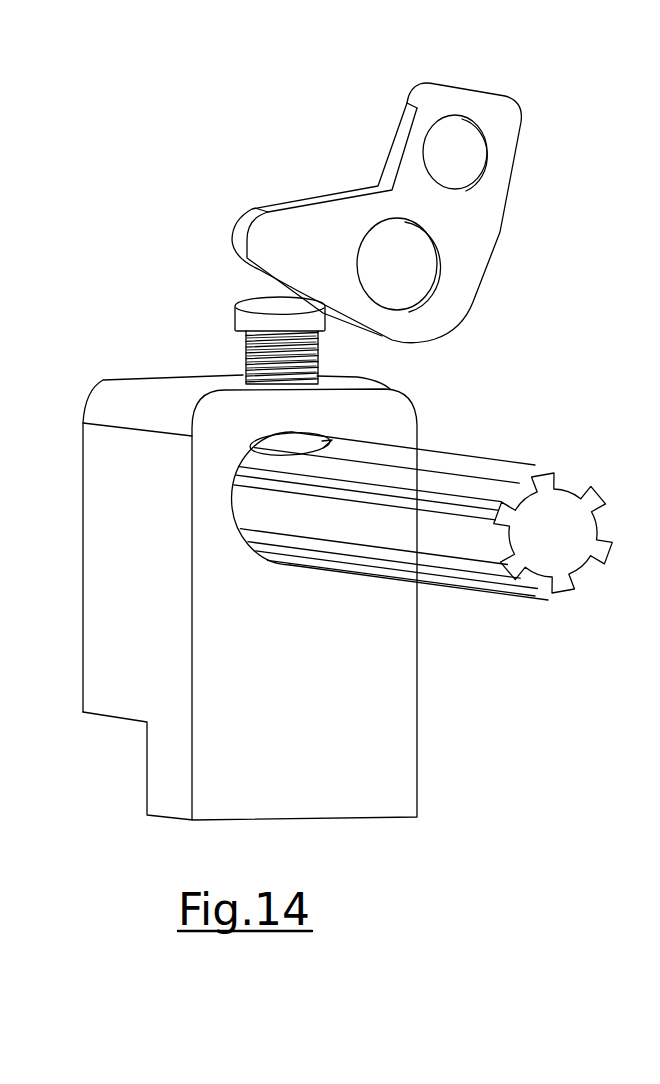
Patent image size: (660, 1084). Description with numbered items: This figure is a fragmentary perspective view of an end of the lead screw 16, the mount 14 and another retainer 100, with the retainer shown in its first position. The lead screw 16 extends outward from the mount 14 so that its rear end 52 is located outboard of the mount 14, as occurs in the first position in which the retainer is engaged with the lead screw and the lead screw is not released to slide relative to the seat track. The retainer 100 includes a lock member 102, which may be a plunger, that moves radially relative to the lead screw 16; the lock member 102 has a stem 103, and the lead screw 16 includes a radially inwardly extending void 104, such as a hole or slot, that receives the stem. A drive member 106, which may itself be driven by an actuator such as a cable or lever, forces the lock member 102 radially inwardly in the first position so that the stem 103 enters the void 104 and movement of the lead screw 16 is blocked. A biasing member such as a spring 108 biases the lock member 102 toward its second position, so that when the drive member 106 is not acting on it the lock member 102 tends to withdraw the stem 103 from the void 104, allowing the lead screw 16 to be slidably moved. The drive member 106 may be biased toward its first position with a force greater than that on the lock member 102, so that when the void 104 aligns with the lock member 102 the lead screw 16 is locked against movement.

The retainer 100 is at (228, 149).
The lock member 102 is at (222, 314).
The stem 103 is at (300, 352).
The void 104 is at (298, 457).
The drive member 106 is at (495, 201).
The spring 108 is at (300, 352).
The mount 14 is at (383, 748).
The lead screw 16 is at (450, 477).
The rear end 52 is at (563, 553).